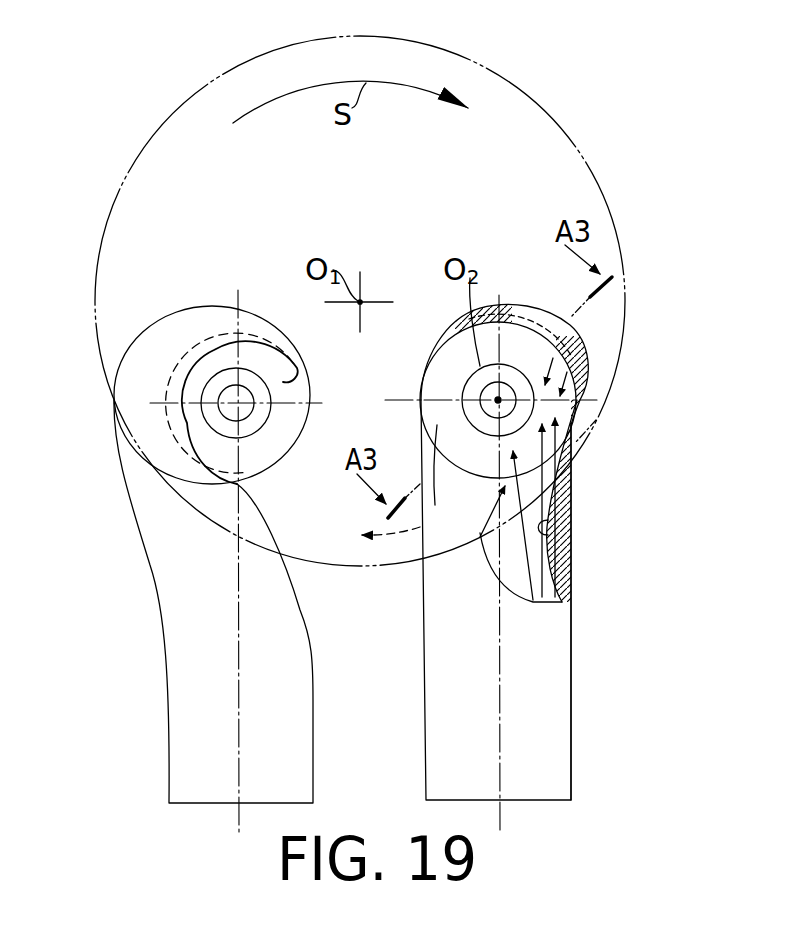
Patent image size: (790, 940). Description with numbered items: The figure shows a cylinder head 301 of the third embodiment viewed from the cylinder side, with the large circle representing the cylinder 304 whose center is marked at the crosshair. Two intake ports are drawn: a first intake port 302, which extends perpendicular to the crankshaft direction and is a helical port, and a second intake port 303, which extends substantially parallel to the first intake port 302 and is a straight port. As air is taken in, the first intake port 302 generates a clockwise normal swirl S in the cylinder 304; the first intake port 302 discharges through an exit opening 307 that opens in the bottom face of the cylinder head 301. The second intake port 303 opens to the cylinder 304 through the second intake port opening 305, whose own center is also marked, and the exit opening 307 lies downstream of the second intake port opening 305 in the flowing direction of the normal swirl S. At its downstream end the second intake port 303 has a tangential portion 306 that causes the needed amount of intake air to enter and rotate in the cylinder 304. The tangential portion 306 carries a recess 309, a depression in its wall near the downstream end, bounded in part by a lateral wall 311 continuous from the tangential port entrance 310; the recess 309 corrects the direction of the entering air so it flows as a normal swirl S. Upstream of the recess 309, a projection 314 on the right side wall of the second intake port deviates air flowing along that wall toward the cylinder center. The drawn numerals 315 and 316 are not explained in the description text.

The cylinder head 301 is at (587, 728).
The first intake port 302 is at (182, 640).
The second intake port 303 is at (533, 657).
The cylinder 304 is at (503, 130).
The second intake port opening 305 is at (530, 443).
The tangential portion 306 is at (562, 601).
The exit opening 307 is at (193, 417).
The recess 309 is at (590, 353).
The tangential port entrance 310 is at (458, 468).
The lateral wall 311 is at (517, 306).
The projection 314 is at (566, 543).
The pin 315 is at (232, 390).
The shaft 316 is at (470, 398).